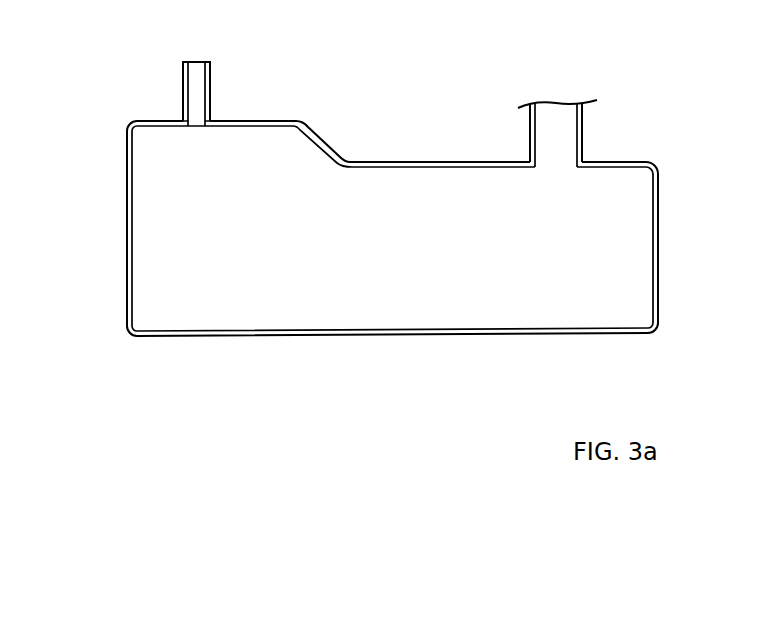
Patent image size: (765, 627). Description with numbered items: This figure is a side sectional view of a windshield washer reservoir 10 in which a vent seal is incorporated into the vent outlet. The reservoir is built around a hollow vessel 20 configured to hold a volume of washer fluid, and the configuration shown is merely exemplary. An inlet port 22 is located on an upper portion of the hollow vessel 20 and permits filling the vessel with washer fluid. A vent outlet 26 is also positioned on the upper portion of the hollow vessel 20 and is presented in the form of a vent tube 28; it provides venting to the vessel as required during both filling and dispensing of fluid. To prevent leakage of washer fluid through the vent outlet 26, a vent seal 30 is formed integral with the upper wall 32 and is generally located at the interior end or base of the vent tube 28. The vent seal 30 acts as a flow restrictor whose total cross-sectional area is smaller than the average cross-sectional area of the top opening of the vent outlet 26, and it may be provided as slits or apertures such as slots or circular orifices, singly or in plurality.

The windshield washer reservoir 10 is at (130, 104).
The hollow vessel 20 is at (165, 305).
The inlet port 22 is at (562, 138).
The vent outlet 26 is at (212, 90).
The vent tube 28 is at (207, 108).
The vent seal 30 is at (195, 127).
The upper wall 32 is at (268, 121).